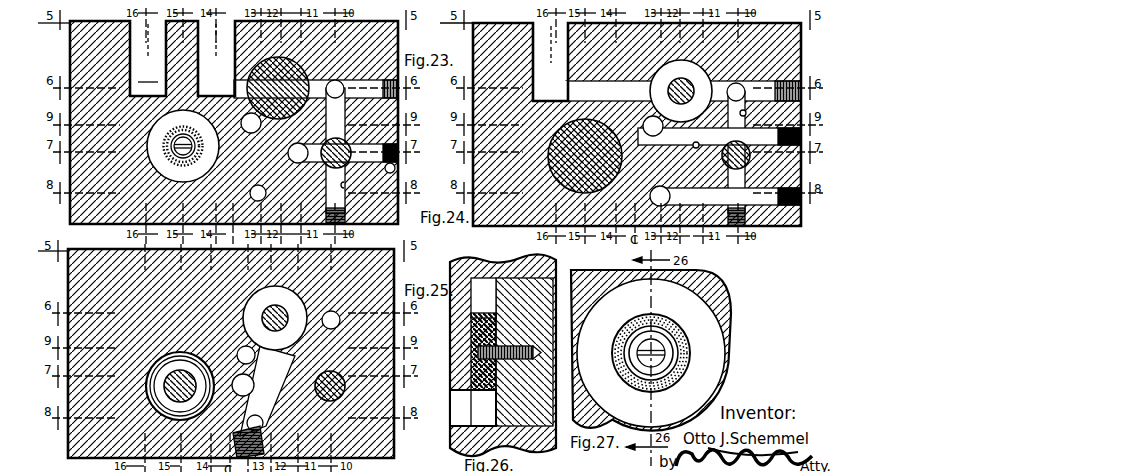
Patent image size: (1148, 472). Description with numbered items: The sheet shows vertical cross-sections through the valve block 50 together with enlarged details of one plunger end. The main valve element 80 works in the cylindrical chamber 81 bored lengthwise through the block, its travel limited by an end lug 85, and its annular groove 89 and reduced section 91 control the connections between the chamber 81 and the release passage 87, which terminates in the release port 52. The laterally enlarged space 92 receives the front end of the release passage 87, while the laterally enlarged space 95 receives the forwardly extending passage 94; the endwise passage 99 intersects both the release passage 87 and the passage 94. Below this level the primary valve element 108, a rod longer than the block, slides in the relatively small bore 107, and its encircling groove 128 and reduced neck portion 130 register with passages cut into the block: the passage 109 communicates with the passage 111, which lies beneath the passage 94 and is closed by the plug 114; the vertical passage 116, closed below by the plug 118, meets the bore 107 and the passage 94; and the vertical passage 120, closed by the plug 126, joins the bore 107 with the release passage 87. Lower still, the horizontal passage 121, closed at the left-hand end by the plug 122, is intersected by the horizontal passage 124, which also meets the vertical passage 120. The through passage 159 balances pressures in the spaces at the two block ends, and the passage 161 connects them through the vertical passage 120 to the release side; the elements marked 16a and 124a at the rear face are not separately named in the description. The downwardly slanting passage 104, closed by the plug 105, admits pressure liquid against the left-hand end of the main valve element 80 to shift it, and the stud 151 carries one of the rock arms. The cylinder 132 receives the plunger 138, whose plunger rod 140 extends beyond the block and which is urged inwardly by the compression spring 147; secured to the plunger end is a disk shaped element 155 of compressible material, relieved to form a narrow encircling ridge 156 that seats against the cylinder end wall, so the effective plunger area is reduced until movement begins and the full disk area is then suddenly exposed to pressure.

In FIG. 23, the valve block 50 is at (234, 122).
In FIG. 24, the valve block 50 is at (637, 124).
In FIG. 25, the valve block 50 is at (231, 353).
In FIG. 26, the valve block 50 is at (512, 436).
In FIG. 23, the laterally enlarged space 92 is at (148, 56).
In FIG. 24, the laterally enlarged space 92 is at (550, 59).
In FIG. 23, the laterally enlarged space 95 is at (216, 56).
In FIG. 23, the forwardly extending passage 94 is at (232, 70).
In FIG. 23, the main valve element 80 is at (290, 62).
In FIG. 23, the passage 99 is at (330, 71).
In FIG. 24, the passage 99 is at (733, 75).
In FIG. 25, the passage 99 is at (330, 306).
In FIG. 23, the passage 109 is at (281, 146).
In FIG. 23, the encircling groove 128 is at (316, 135).
In FIG. 23, the through passage 159 is at (240, 124).
In FIG. 24, the through passage 159 is at (668, 106).
In FIG. 25, the through passage 159 is at (232, 353).
In FIG. 23, the horizontal passage 121 is at (252, 183).
In FIG. 24, the horizontal passage 121 is at (660, 190).
In FIG. 23, the plug 114 is at (388, 162).
In FIG. 23, the vertical passage 116 is at (337, 177).
In FIG. 23, the bore 107 is at (338, 155).
In FIG. 23, the passage 111 is at (360, 136).
In FIG. 23, the reduced diameter neck portion 130 is at (312, 150).
In FIG. 23, the plug 118 is at (338, 208).
In FIG. 23, the disk shaped element 155 is at (160, 136).
In FIG. 26, the disk shaped element 155 is at (466, 368).
In FIG. 27, the disk shaped element 155 is at (680, 327).
In FIG. 23, the plunger 138 is at (142, 150).
In FIG. 24, the plunger 138 is at (550, 165).
In FIG. 26, the plunger 138 is at (520, 300).
In FIG. 27, the plunger 138 is at (611, 318).
In FIG. 23, the cylinder 132 is at (107, 236).
In FIG. 24, the cylinder 132 is at (540, 150).
In FIG. 25, the cylinder 132 is at (140, 386).
In FIG. 26, the cylinder 132 is at (500, 262).
In FIG. 27, the cylinder 132 is at (708, 290).
In FIG. 24, the release passage 87 is at (780, 70).
In FIG. 24, the port 52 is at (792, 70).
In FIG. 24, the annular groove 89 is at (690, 62).
In FIG. 24, the reduced section 91 is at (686, 76).
In FIG. 24, the plug 16a is at (795, 125).
In FIG. 24, the vertical passage 120 is at (740, 106).
In FIG. 24, the plug 124a is at (786, 178).
In FIG. 24, the primary valve element 108 is at (740, 156).
In FIG. 25, the primary valve element 108 is at (333, 368).
In FIG. 24, the passage 161 is at (686, 140).
In FIG. 24, the horizontal passage 124 is at (746, 198).
In FIG. 24, the plug 126 is at (740, 212).
In FIG. 25, the compression spring 147 is at (172, 344).
In FIG. 25, the plunger rod 140 is at (180, 364).
In FIG. 25, the downwardly slanting passage 104 is at (266, 388).
In FIG. 25, the plug 122 is at (255, 412).
In FIG. 25, the cylindrical chamber 81 is at (246, 296).
In FIG. 25, the end lug 85 is at (254, 309).
In FIG. 25, the stud 151 is at (232, 387).
In FIG. 25, the plug 105 is at (254, 430).
In FIG. 26, the encircling ridge 156 is at (464, 309).
In FIG. 27, the encircling ridge 156 is at (686, 347).